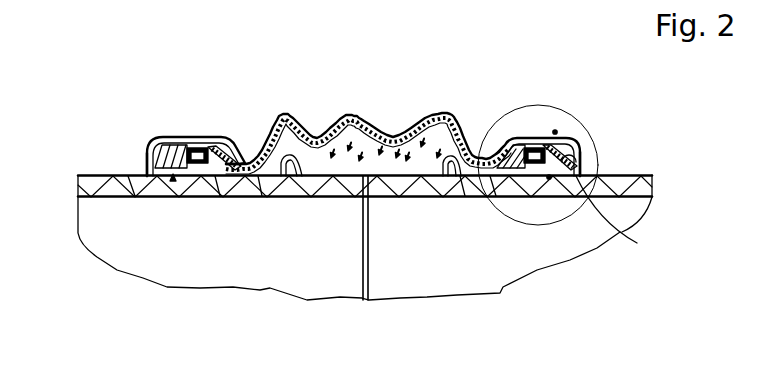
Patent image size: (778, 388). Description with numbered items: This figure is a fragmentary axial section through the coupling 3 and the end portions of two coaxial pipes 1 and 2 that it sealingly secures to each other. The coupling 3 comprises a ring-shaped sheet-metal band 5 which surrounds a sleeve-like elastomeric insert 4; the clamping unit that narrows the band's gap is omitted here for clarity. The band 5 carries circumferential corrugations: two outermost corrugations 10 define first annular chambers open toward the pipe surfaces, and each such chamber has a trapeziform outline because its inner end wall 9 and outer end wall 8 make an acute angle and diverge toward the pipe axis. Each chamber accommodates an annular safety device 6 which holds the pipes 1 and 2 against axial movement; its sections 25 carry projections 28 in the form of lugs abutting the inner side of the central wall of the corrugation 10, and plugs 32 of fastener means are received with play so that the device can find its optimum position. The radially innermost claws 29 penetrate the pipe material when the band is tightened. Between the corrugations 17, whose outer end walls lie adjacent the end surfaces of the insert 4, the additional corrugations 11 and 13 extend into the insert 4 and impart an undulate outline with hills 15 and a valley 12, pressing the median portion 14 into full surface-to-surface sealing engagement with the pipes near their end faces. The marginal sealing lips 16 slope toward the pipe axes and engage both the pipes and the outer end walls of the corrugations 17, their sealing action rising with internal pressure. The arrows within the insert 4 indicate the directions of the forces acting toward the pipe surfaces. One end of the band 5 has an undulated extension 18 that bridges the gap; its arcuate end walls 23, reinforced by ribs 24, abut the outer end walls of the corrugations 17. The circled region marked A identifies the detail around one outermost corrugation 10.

The pipe 1 is at (102, 175).
The pipe 2 is at (634, 174).
The coupling 3 is at (269, 102).
The sleeve-like insert 4 is at (321, 184).
The band 5 is at (157, 129).
The safety device 6 is at (172, 178).
The outer end wall 8 is at (148, 158).
The inner end wall 9 is at (229, 152).
The outermost corrugation 10 is at (193, 148).
The additional corrugation 11 is at (322, 127).
The valley 12 is at (312, 120).
The additional corrugation 13 is at (303, 172).
The median portion 14 is at (358, 171).
The hill 15 is at (283, 113).
The sealing lip 16 is at (280, 171).
The corrugation 17 is at (288, 135).
The extension 18 is at (360, 128).
The end wall 23 is at (266, 122).
The rib 24 is at (265, 178).
The section 25 is at (556, 133).
The projection 28 is at (173, 147).
The claw 29 is at (133, 197).
The plug 32 is at (204, 150).
The detail circle A is at (591, 128).